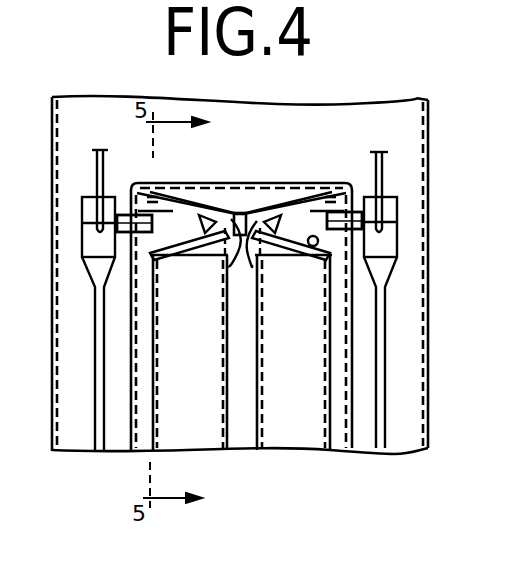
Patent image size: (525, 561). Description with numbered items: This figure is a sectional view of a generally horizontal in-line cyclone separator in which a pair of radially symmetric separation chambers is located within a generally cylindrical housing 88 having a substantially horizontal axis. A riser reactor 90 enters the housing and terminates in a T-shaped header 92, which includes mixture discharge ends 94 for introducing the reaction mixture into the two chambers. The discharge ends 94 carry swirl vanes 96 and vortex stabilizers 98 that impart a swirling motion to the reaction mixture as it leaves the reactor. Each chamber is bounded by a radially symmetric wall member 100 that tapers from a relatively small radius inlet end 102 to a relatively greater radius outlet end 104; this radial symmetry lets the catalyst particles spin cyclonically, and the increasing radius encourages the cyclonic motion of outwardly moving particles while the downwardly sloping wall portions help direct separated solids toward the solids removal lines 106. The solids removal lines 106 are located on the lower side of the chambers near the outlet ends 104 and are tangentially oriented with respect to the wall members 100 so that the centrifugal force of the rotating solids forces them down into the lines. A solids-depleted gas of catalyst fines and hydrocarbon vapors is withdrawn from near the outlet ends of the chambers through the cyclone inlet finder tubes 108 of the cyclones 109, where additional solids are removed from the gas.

The housing 88 is at (284, 302).
The riser reactor 90 is at (248, 338).
The T-shaped header 92 is at (267, 186).
The mixture discharge ends 94 is at (226, 250).
The swirl vanes 96 is at (240, 262).
The vortex stabilizers 98 is at (196, 226).
The wall members 100 is at (184, 200).
The inlet ends 102 is at (226, 195).
The outlet ends 104 is at (138, 201).
The solids removal lines 106 is at (140, 425).
The cyclone inlet finder tubes 108 is at (117, 224).
The cyclones 109 is at (100, 240).